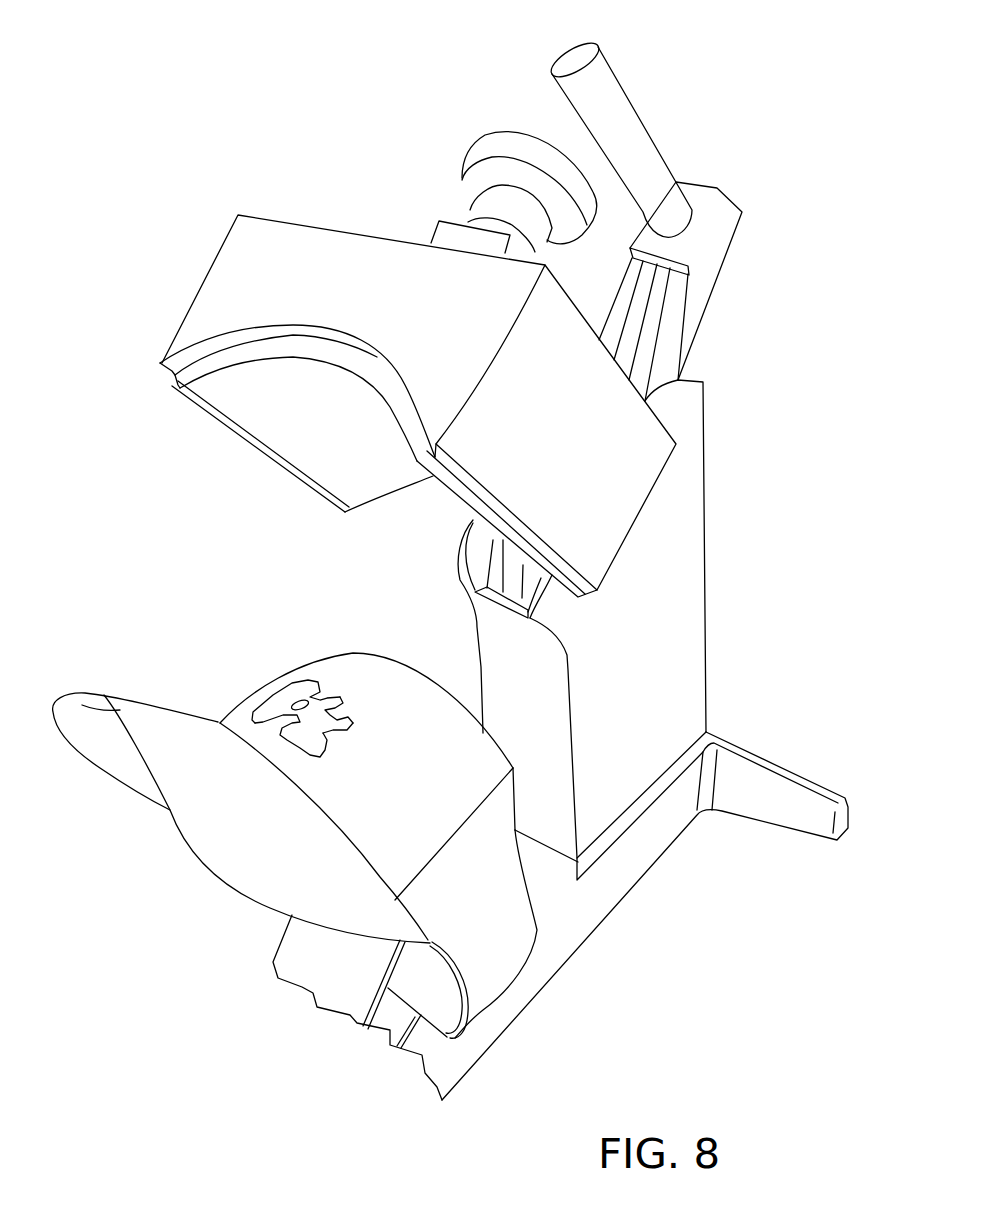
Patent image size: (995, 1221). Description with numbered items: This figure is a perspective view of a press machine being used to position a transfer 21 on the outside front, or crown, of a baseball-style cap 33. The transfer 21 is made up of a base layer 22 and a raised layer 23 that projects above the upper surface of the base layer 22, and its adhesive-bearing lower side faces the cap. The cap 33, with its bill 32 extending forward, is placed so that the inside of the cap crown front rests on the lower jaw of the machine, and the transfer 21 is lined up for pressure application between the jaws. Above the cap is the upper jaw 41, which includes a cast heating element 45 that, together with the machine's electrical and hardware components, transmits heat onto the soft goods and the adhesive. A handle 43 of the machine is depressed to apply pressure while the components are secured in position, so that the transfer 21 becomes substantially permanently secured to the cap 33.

The transfer 21 is at (352, 723).
The base layer 22 is at (318, 747).
The raised layer 23 is at (347, 712).
The bill 32 is at (147, 710).
The baseball-style cap 33 is at (355, 652).
The upper jaw 41 is at (213, 262).
The handle 43 is at (637, 116).
The cast heating element 45 is at (242, 415).